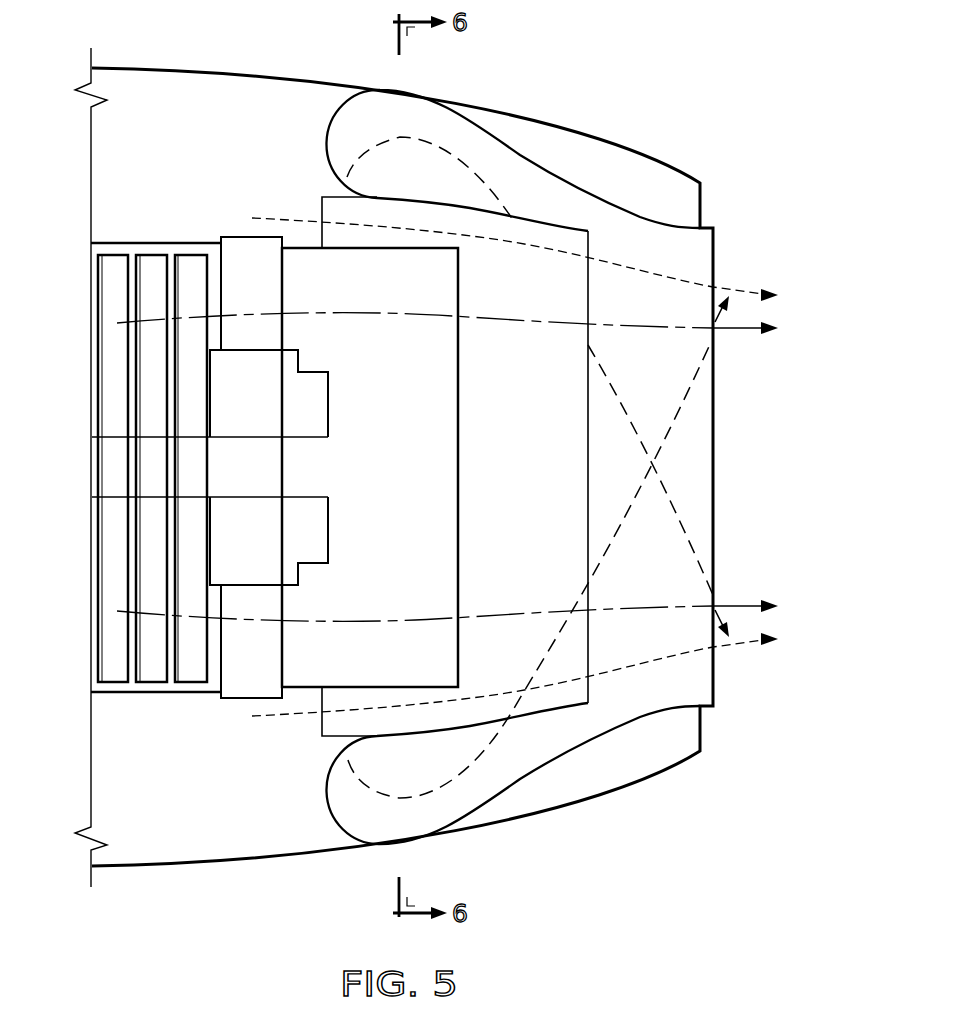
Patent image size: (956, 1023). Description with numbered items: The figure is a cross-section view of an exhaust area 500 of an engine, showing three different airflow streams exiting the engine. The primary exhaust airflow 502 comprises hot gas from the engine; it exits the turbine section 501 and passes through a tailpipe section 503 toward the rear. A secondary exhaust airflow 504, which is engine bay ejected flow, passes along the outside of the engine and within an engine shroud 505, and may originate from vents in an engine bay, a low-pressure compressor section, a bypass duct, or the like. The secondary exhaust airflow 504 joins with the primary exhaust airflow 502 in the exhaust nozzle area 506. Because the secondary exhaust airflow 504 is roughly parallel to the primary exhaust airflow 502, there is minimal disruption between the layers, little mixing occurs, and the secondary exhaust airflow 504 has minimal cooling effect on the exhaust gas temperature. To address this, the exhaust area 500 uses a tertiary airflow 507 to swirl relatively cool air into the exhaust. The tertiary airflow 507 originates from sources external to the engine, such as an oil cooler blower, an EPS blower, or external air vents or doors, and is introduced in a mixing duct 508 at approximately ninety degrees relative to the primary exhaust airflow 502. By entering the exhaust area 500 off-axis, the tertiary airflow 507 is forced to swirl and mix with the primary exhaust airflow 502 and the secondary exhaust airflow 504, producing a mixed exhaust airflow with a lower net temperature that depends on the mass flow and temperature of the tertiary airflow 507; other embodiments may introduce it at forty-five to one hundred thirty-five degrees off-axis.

The exhaust area 500 is at (694, 100).
The turbine section 501 is at (152, 240).
The primary exhaust airflow 502 is at (740, 334).
The tailpipe section 503 is at (411, 418).
The secondary exhaust airflow 504 is at (742, 291).
The engine shroud 505 is at (546, 118).
The exhaust nozzle area 506 is at (546, 418).
The tertiary airflow 507 is at (364, 141).
The mixing duct 508 is at (427, 188).